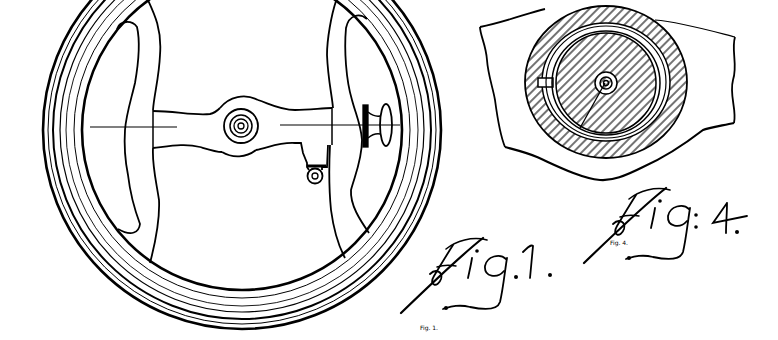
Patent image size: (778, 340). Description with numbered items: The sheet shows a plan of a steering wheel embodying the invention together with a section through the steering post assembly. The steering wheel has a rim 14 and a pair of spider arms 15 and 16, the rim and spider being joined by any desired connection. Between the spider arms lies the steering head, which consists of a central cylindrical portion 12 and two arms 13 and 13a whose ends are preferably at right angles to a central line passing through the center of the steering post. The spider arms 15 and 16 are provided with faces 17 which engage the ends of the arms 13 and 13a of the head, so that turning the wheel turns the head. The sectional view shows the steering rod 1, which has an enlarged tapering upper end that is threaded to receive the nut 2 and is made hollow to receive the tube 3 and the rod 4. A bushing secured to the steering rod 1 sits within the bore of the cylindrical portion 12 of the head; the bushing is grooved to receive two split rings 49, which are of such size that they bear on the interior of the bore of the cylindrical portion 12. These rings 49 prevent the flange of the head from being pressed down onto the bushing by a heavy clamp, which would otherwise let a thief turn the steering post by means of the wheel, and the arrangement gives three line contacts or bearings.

In FIG. 4, the steering rod 1 is at (577, 130).
In FIG. 1, the nut 2 is at (250, 91).
In FIG. 4, the tube 3 is at (617, 82).
In FIG. 4, the rod 4 is at (600, 88).
In FIG. 4, the central cylindrical portion 12 is at (599, 150).
In FIG. 1, the arm 13 is at (186, 120).
In FIG. 1, the arm 13a is at (292, 118).
In FIG. 1, the rim 14 is at (236, 300).
In FIG. 1, the spider arm 15 is at (155, 193).
In FIG. 1, the spider arm 16 is at (333, 203).
In FIG. 1, the faces 17 is at (153, 115).
In FIG. 4, the split rings 49 is at (643, 128).